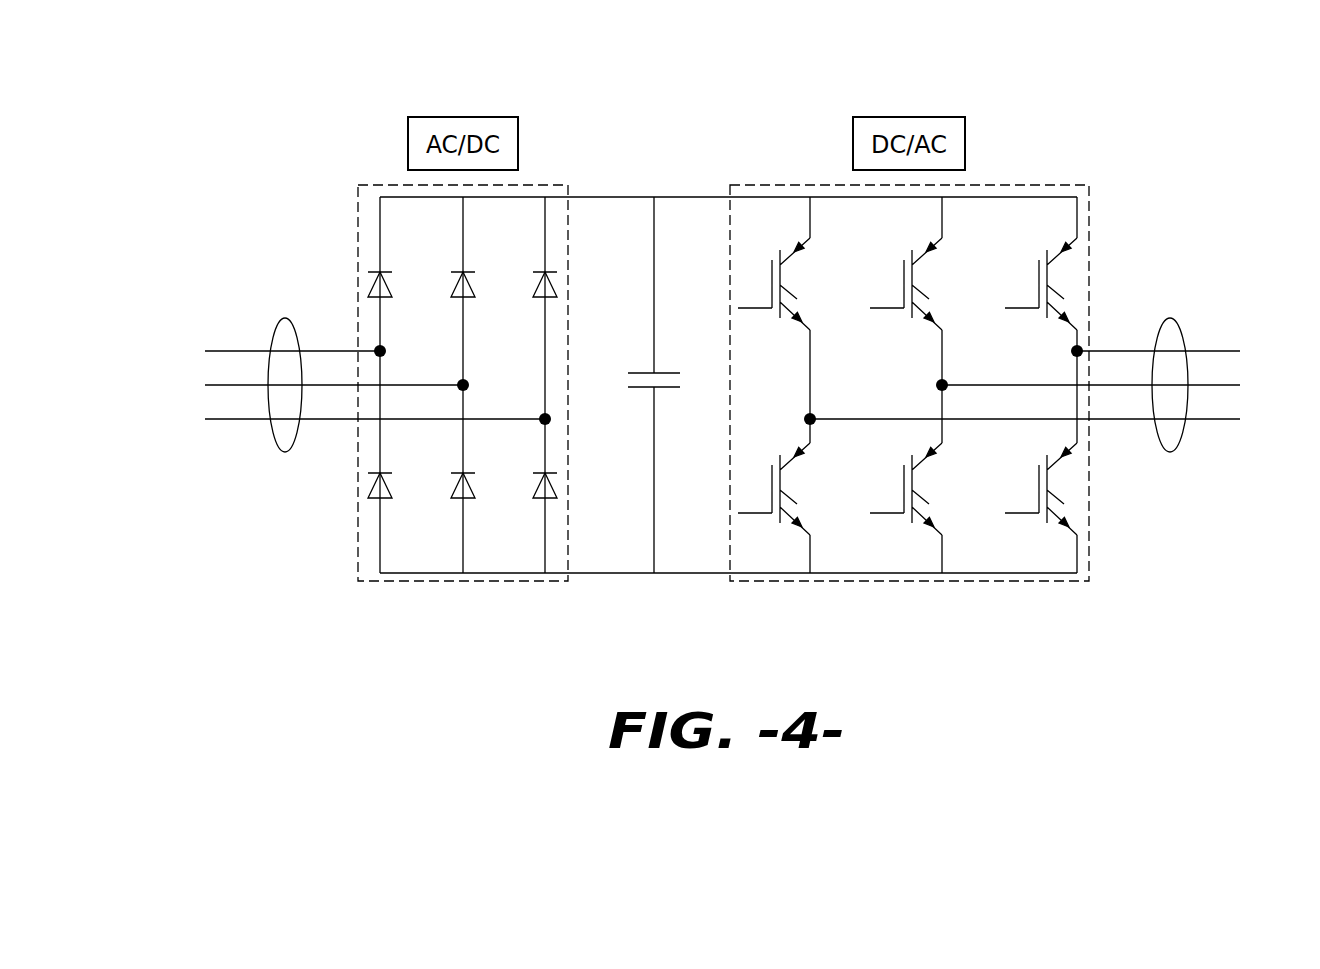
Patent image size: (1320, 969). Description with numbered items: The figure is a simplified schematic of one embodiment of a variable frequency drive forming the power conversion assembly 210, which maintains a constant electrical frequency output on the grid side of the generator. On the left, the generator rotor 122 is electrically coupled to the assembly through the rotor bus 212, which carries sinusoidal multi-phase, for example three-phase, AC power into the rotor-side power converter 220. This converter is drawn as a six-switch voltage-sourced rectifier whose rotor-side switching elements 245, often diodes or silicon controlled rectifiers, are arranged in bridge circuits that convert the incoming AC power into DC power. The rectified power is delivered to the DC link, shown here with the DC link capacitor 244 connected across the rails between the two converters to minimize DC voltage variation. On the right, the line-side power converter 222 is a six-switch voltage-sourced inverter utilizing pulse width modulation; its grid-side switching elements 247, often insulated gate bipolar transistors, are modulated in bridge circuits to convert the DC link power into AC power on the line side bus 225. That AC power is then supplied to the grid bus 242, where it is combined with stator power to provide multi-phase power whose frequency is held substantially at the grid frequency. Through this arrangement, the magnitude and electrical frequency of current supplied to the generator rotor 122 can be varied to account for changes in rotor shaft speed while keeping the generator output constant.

The power conversion assembly 210 is at (1226, 93).
The generator rotor 122 is at (142, 448).
The rotor bus 212 is at (285, 452).
The rotor-side power converter 220 is at (413, 582).
The rotor-side switching elements 245 is at (483, 485).
The DC link capacitor 244 is at (694, 255).
The line-side power converter 222 is at (1015, 582).
The grid-side switching elements 247 is at (898, 525).
The line side bus 225 is at (1170, 317).
The grid bus 242 is at (1312, 453).